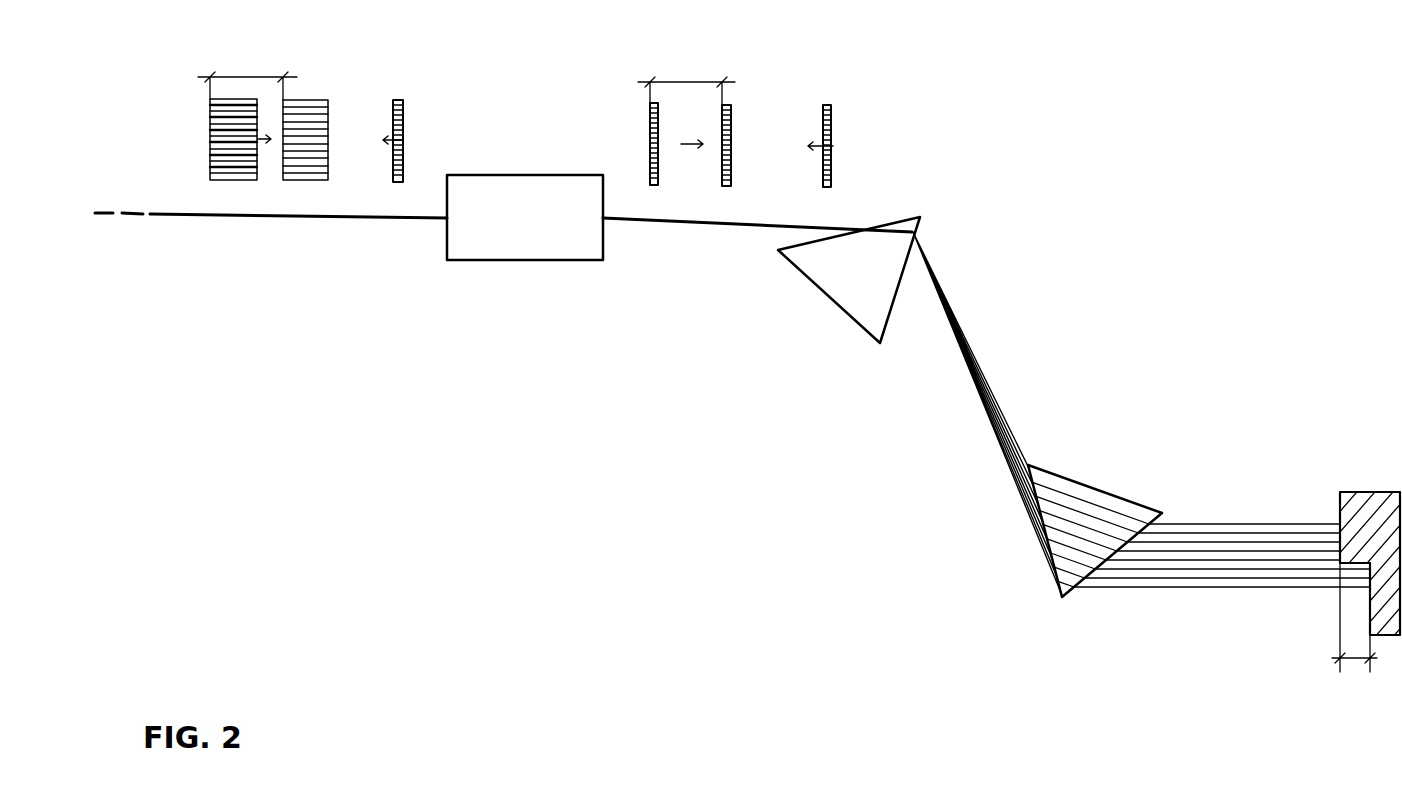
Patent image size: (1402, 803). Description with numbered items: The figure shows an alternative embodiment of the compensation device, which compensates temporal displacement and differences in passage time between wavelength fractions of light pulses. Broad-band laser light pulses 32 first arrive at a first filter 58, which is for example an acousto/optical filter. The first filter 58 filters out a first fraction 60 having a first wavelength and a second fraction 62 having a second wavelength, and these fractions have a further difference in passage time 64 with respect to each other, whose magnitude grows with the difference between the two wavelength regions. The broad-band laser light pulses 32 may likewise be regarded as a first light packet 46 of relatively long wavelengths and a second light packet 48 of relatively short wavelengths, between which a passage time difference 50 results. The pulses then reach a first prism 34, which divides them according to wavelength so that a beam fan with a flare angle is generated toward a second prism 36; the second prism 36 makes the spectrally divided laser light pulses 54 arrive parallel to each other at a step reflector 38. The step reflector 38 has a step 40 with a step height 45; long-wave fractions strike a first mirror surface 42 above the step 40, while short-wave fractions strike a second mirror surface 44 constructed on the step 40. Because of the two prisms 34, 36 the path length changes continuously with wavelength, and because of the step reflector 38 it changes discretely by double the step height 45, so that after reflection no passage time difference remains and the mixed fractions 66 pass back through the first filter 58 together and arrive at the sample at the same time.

The broad-band laser light pulses 32 is at (323, 213).
The first prism 34 is at (833, 298).
The second prism 36 is at (1060, 588).
The step reflector 38 is at (1365, 492).
The step 40 is at (1368, 600).
The first mirror surface 42 is at (1340, 502).
The second mirror surface 44 is at (1362, 630).
The step height 45 is at (1352, 660).
The first light packet 46 is at (210, 115).
The second light packet 48 is at (329, 117).
The passage time difference 50 is at (243, 77).
The spectrally divided laser light pulses 54 is at (1247, 523).
The first filter 58 is at (520, 260).
The first fraction 60 is at (650, 135).
The second fraction 62 is at (730, 138).
The further difference in passage time 64 is at (697, 82).
The mixed fractions 66 is at (403, 113).